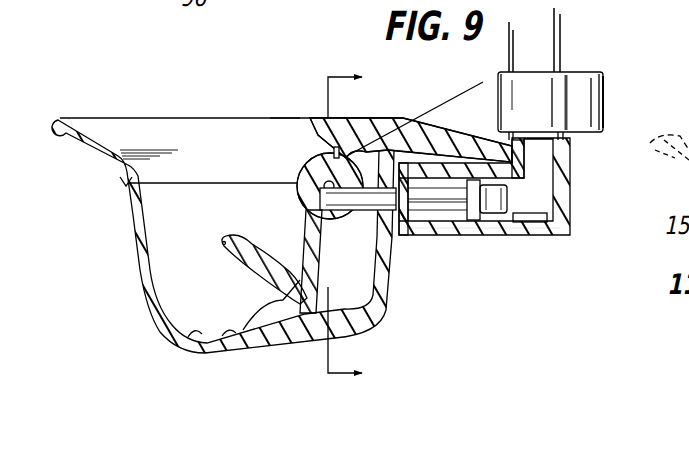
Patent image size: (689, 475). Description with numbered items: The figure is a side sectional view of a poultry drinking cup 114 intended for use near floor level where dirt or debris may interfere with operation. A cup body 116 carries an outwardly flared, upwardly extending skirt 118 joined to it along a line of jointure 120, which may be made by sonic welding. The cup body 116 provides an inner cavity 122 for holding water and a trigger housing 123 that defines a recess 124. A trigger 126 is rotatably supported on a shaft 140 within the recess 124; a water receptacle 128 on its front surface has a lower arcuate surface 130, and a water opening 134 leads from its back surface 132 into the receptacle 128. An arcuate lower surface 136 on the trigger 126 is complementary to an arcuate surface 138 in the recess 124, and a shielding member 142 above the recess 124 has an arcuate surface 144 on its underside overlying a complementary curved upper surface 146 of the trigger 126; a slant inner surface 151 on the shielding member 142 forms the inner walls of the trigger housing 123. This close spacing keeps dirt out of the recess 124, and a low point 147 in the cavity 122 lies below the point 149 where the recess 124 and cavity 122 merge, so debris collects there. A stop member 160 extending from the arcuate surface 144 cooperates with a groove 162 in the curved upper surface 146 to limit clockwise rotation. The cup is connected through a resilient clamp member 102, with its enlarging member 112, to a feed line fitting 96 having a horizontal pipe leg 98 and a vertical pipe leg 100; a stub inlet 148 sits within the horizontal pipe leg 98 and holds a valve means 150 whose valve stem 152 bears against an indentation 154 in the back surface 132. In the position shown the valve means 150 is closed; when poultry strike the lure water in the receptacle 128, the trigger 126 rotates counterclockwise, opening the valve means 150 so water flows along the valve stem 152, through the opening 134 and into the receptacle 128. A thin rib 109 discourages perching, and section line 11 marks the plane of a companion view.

The section line 11- 11 is at (368, 227).
The feed line fitting 96 is at (575, 194).
The horizontal pipe leg 98 is at (556, 237).
The vertical pipe leg 100 is at (558, 40).
The clamp member 102 is at (580, 72).
The rib 109 is at (483, 82).
The enlarging member 112 is at (606, 87).
The poultry drinking cup 114 is at (182, 115).
The cup body 116 is at (137, 274).
The skirt 118 is at (132, 126).
The line of jointure 120 is at (203, 183).
The inner cavity 122 is at (228, 327).
The trigger housing 123 is at (398, 331).
The recess 124 is at (390, 322).
The trigger 126 is at (231, 269).
The water receptacle 128 is at (232, 245).
The lower arcuate surface 130 is at (288, 247).
The back surface 132 is at (310, 343).
The water opening 134 is at (312, 222).
The arcuate lower surface 136 is at (222, 246).
The arcuate surface 138 is at (329, 342).
The shaft 140 is at (404, 126).
The shielding member 142 is at (343, 118).
The arcuate surface 144 is at (390, 151).
The curved upper surface 146 is at (313, 160).
The low point 147 is at (190, 345).
The stub inlet 148 is at (395, 234).
The point 149 is at (238, 345).
The valve means 150 is at (430, 226).
The slant inner surface 151 is at (285, 118).
The valve stem 152 is at (573, 163).
The indentation 154 is at (370, 218).
The stop member 160 is at (346, 153).
The groove 162 is at (305, 172).